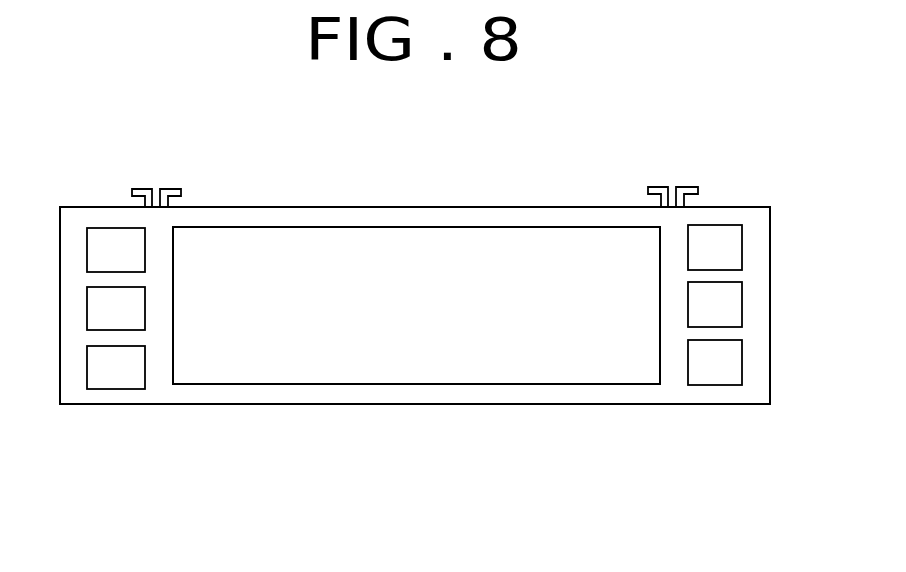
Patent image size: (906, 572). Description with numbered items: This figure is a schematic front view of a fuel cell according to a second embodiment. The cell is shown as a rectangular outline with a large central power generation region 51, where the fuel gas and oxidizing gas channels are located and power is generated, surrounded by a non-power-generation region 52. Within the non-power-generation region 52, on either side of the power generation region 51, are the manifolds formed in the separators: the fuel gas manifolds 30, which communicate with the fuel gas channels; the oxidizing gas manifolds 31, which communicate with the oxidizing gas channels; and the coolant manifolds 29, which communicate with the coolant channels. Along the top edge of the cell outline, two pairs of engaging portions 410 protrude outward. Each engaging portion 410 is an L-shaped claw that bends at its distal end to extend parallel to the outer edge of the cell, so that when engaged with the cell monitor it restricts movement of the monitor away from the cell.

The coolant manifolds 29 is at (103, 369).
The fuel gas manifolds 30 is at (103, 250).
The oxidizing gas manifolds 31 is at (103, 315).
The power generation region 51 is at (430, 227).
The non-power-generation region 52 is at (76, 284).
The engaging portions 410 is at (178, 189).